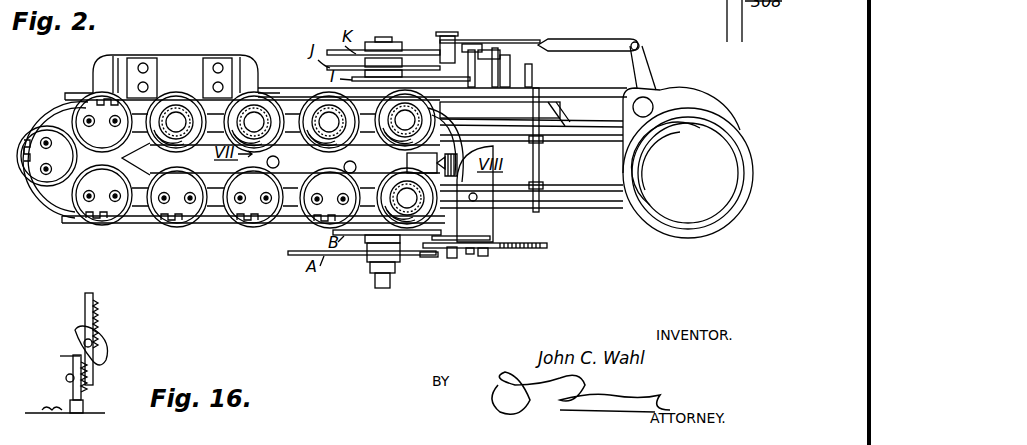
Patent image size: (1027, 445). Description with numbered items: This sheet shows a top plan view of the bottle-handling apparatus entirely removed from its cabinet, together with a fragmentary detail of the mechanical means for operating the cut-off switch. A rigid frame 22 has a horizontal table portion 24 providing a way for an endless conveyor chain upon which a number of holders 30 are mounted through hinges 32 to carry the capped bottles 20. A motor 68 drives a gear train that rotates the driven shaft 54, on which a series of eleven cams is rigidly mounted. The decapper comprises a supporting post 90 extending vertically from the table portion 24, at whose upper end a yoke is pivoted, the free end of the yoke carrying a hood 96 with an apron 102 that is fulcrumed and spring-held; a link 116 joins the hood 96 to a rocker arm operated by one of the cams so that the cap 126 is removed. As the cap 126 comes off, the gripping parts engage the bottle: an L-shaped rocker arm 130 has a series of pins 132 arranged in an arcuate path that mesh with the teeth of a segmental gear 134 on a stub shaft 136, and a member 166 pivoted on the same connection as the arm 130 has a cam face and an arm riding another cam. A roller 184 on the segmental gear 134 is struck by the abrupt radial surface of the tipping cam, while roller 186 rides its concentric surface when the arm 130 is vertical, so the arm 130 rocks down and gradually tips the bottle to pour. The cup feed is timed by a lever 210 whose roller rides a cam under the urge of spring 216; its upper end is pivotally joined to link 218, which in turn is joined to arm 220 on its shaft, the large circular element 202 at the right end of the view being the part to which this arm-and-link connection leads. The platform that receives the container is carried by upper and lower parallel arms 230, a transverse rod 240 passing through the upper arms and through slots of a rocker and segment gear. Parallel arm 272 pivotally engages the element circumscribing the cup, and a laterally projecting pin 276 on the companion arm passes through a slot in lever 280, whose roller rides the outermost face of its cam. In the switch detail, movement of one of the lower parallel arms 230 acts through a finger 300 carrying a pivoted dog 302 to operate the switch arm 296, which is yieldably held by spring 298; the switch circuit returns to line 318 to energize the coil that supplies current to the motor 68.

In FIG. 2, the capped bottles 20 is at (168, 137).
In FIG. 2, the rigid frame 22 is at (253, 230).
In FIG. 2, the table portion 24 is at (61, 108).
In FIG. 2, the holders 30 is at (176, 94).
In FIG. 2, the hinges 32 is at (92, 222).
In FIG. 2, the driven shaft 54 is at (388, 40).
In FIG. 2, the motor 68 is at (246, 90).
In FIG. 2, the supporting post 90 is at (273, 162).
In FIG. 2, the hood 96 is at (468, 161).
In FIG. 2, the apron 102 is at (432, 164).
In FIG. 2, the link 116 is at (350, 176).
In FIG. 2, the cap 126 is at (332, 120).
In FIG. 2, the L-shaped rocker arm 130 is at (488, 223).
In FIG. 2, the pins 132 is at (524, 246).
In FIG. 2, the segmental gear 134 is at (498, 252).
In FIG. 2, the stub shaft 136 is at (472, 256).
In FIG. 2, the member 166 is at (520, 236).
In FIG. 2, the roller 184 is at (430, 258).
In FIG. 2, the roller 186 is at (450, 258).
In FIG. 2, the cam drum 202 is at (722, 132).
In FIG. 2, the lever 210 is at (440, 56).
In FIG. 2, the spring 216 is at (490, 43).
In FIG. 2, the link 218 is at (563, 40).
In FIG. 2, the arm 220 is at (647, 71).
In FIG. 2, the lower parallel arms 230 is at (575, 141).
In FIG. 2, the transverse rod 240 is at (534, 68).
In FIG. 2, the parallel arm 272 is at (566, 121).
In FIG. 2, the pin 276 is at (540, 164).
In FIG. 2, the lever 280 is at (507, 67).
In FIG. 16, the arm 296 is at (72, 357).
In FIG. 16, the spring 298 is at (84, 395).
In FIG. 16, the finger 300 is at (94, 301).
In FIG. 16, the dog 302 is at (76, 331).
In FIG. 2, the line 318 is at (727, 27).